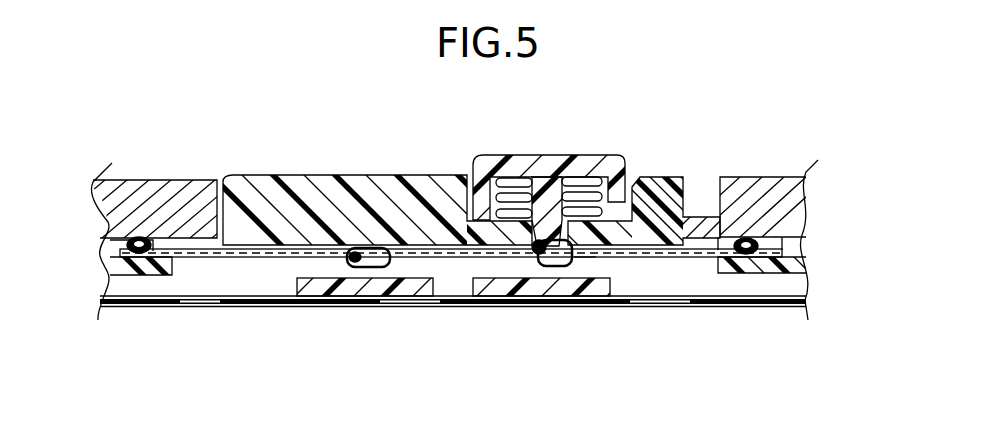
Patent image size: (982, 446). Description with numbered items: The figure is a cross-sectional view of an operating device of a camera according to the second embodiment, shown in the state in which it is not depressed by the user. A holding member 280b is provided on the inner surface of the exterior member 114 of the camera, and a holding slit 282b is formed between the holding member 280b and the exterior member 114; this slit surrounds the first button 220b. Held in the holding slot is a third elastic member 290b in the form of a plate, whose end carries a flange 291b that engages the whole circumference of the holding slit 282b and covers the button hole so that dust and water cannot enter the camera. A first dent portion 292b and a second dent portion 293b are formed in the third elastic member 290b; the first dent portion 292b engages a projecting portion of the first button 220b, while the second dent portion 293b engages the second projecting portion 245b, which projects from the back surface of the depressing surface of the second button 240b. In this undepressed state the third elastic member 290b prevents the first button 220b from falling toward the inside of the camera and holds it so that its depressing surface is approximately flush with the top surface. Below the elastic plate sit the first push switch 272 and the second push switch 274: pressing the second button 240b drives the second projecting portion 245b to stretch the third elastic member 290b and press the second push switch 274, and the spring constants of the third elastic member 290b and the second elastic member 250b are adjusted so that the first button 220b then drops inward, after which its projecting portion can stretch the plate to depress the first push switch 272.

The exterior member 114 is at (788, 250).
The first button 220b is at (391, 175).
The second button 240b is at (556, 170).
The second elastic member 250b is at (586, 175).
The second projecting portion 245b is at (540, 266).
The first push switch 272 is at (405, 297).
The second push switch 274 is at (492, 297).
The holding member 280b is at (131, 300).
The holding slit 282b is at (738, 238).
The third elastic member 290b is at (206, 257).
The flange 291b is at (132, 250).
The first dent portion 292b is at (353, 268).
The second dent portion 293b is at (584, 258).